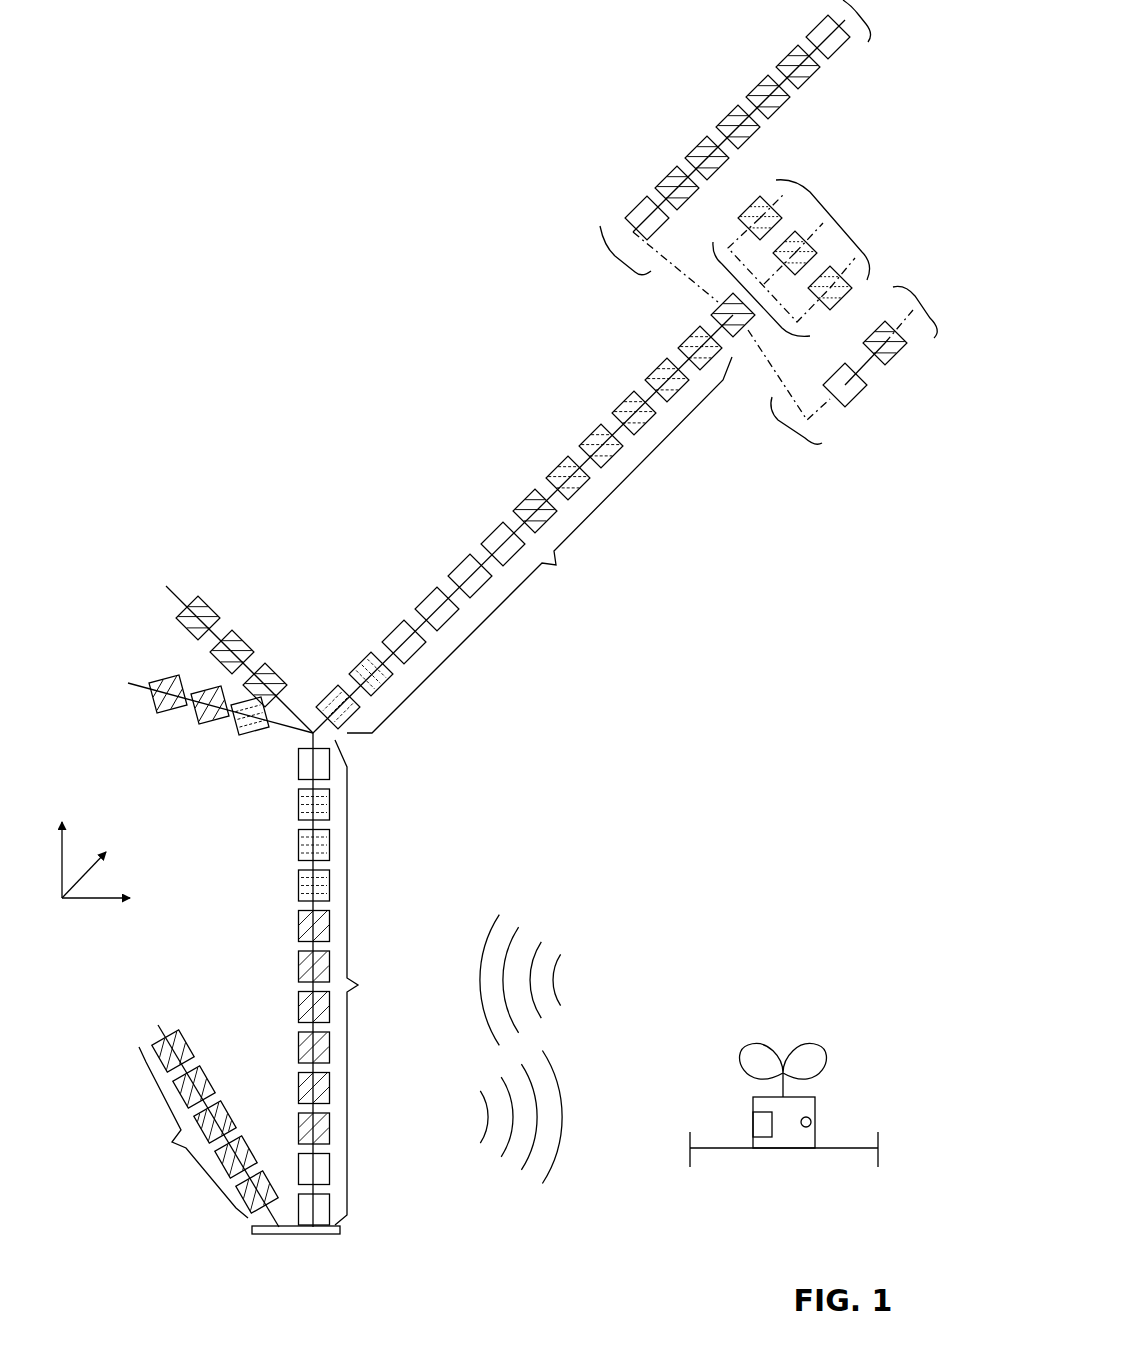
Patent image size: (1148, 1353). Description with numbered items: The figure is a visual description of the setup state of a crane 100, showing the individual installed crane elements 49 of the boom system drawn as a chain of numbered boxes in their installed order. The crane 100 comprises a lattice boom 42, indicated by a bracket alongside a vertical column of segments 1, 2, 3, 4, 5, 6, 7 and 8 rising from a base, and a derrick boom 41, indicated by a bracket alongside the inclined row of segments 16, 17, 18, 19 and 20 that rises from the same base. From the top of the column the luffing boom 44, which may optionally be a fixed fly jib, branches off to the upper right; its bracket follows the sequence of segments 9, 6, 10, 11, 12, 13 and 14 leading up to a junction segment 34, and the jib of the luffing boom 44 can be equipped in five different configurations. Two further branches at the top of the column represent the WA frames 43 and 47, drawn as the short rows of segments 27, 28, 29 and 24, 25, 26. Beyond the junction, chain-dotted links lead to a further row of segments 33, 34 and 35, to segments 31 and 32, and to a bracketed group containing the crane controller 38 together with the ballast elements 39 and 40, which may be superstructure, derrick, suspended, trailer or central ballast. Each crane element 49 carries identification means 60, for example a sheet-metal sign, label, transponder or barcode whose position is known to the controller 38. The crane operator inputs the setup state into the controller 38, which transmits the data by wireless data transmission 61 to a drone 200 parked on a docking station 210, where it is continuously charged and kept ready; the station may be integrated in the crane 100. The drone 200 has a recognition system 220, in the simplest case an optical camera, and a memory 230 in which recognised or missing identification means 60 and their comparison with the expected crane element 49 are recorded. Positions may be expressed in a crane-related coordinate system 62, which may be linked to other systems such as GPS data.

The base segment 1 is at (314, 1209).
The segment 2 is at (314, 1169).
The segment 3 is at (314, 1109).
The segment 4 is at (314, 1028).
The segment 5 is at (314, 947).
The segment 6 is at (346, 776).
The segment 7 is at (314, 804).
The segment 8 is at (314, 764).
The segment 9 is at (338, 707).
The segment 10 is at (404, 642).
The segment 11 is at (453, 592).
The segment 12 is at (503, 544).
The segment 13 is at (535, 511).
The segment 14 is at (634, 413).
The segment 16 is at (257, 1192).
The segment 17 is at (236, 1157).
The segment 18 is at (215, 1122).
The segment 19 is at (194, 1087).
The segment 20 is at (173, 1051).
The segment 24 is at (265, 685).
The segment 25 is at (232, 652).
The segment 26 is at (198, 618).
The segment 27 is at (250, 716).
The segment 28 is at (210, 705).
The segment 29 is at (168, 694).
The segment 31 is at (807, 387).
The segment 32 is at (891, 335).
The segment 33 is at (722, 161).
The segment 34 is at (737, 191).
The segment 35 is at (838, 29).
The crane controller 38 is at (791, 258).
The ballast element 39 is at (793, 254).
The ballast element 40 is at (831, 284).
The derrick boom 41 is at (209, 1126).
The lattice boom 42 is at (367, 982).
The WA frame 43 is at (113, 682).
The luffing boom 44 is at (523, 524).
The WA frame 47 is at (158, 577).
The crane element 49 is at (437, 543).
The identification means 60 is at (420, 615).
The data transmission 61 is at (468, 1057).
The coordinate system 62 is at (95, 925).
The crane 100 is at (257, 523).
The drone 200 is at (857, 1133).
The docking station 210 is at (690, 1160).
The recognition system 220 is at (757, 1122).
The memory 230 is at (812, 1122).